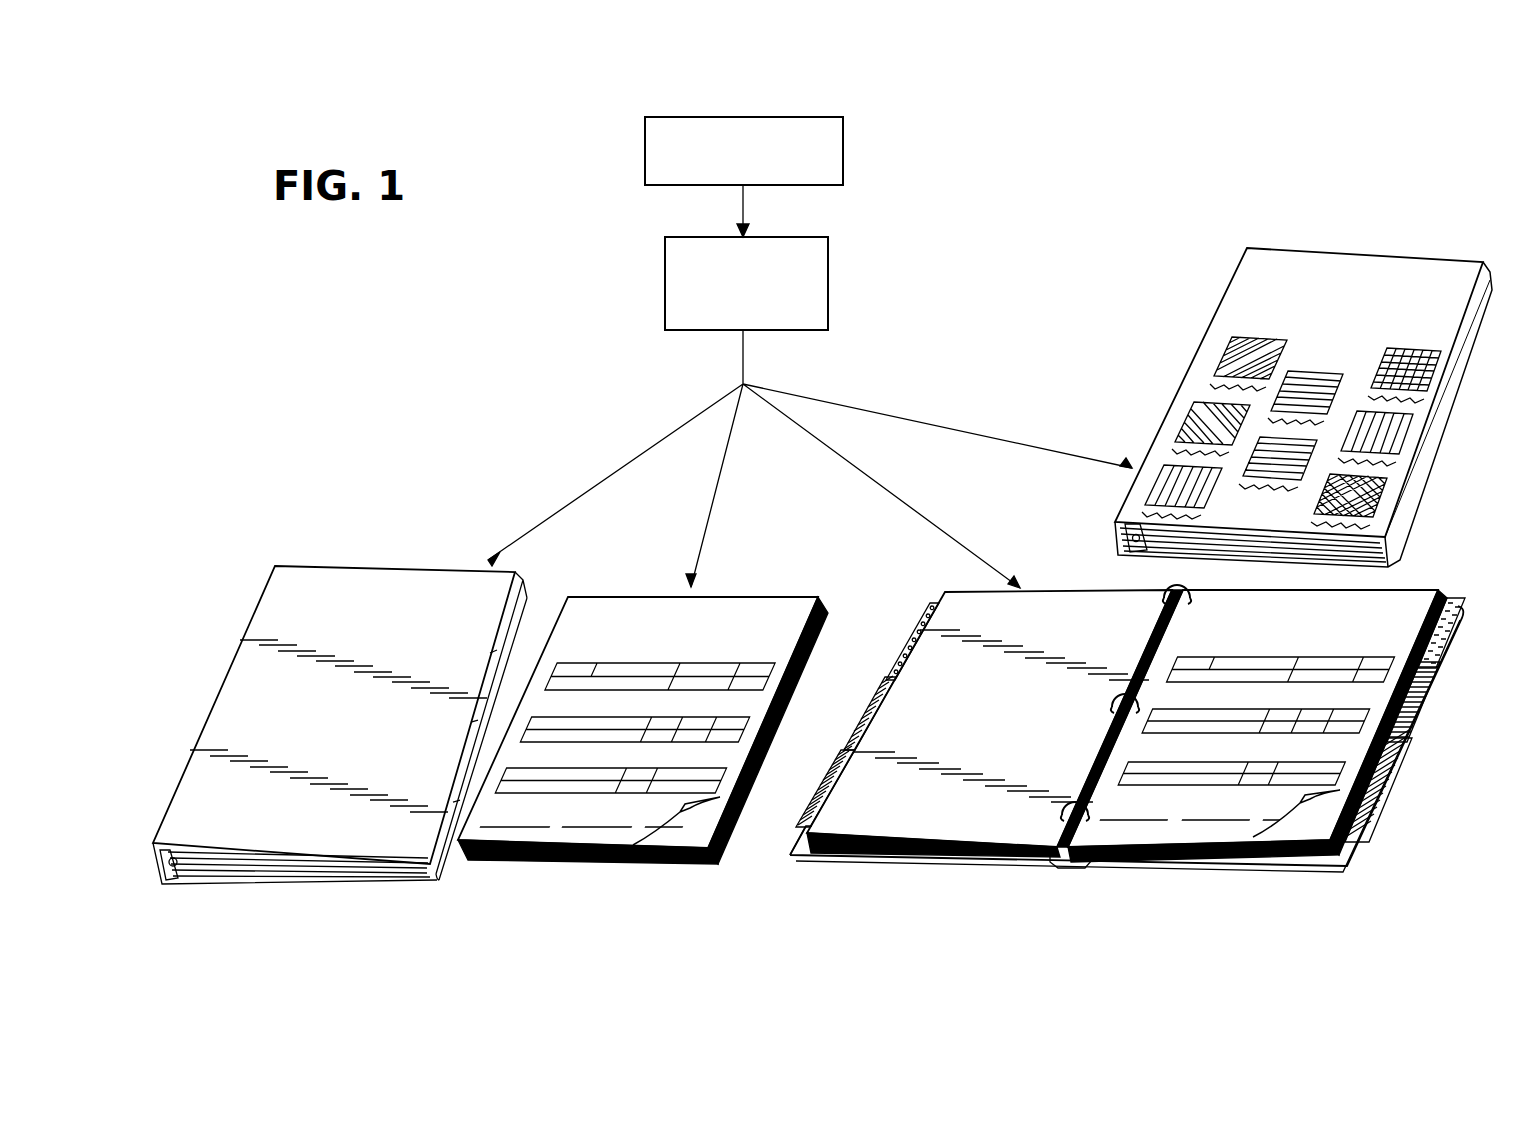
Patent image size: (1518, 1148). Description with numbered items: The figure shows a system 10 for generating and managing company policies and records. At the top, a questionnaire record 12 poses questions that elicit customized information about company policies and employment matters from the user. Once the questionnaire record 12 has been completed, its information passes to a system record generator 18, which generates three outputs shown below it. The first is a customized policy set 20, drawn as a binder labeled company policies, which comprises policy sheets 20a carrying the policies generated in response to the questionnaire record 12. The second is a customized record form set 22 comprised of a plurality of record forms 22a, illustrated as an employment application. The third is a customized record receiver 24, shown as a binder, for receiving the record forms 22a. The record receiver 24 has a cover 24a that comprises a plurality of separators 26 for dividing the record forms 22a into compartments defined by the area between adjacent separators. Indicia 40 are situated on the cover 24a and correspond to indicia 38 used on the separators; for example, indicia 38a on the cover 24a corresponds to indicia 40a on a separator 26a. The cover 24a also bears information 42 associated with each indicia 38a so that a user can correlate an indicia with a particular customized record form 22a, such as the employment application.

The system 10 is at (428, 322).
The questionnaire record 12 is at (843, 160).
The system record generator 18 is at (828, 284).
The customized policy set 20 is at (383, 883).
The policy sheets 20a is at (240, 868).
The customized record form set 22 is at (563, 866).
The record forms 22a is at (683, 815).
The customized record receiver 24 is at (1172, 866).
The cover 24a is at (810, 848).
The separators 26 is at (1432, 664).
The separator 26a is at (796, 828).
The indicia 38 is at (920, 620).
The indicia 38a is at (808, 797).
The indicia 40 is at (1392, 437).
The indicia 40a is at (1232, 351).
The information 42 is at (1210, 386).